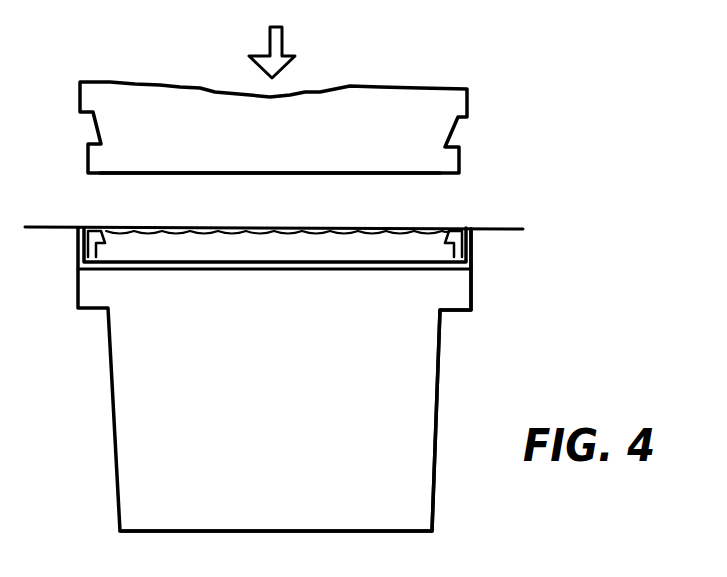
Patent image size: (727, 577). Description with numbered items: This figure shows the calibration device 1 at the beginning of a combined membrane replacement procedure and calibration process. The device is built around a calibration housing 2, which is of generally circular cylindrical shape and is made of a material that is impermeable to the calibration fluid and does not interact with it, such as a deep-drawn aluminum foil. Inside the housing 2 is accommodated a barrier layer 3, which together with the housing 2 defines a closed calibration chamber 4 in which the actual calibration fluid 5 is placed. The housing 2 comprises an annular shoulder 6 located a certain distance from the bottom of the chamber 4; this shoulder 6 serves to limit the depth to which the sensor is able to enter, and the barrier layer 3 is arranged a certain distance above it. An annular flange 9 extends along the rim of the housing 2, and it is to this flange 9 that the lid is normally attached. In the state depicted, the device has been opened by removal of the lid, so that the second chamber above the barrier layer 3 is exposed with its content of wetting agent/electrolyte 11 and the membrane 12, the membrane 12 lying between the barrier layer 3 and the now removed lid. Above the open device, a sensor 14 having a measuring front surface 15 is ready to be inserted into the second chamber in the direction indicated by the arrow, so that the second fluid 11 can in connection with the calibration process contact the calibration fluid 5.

The container 1 is at (257, 359).
The calibration housing 2 is at (119, 500).
The barrier layer 3 is at (320, 270).
The calibration chamber 4 is at (427, 428).
The calibration fluid 5 is at (293, 423).
The annular shoulder 6 is at (458, 313).
The annular flange 9 is at (50, 231).
The second fluid 11 is at (158, 237).
The membrane 12 is at (272, 262).
The sensor 14 is at (446, 112).
The measuring front surface 15 is at (436, 176).